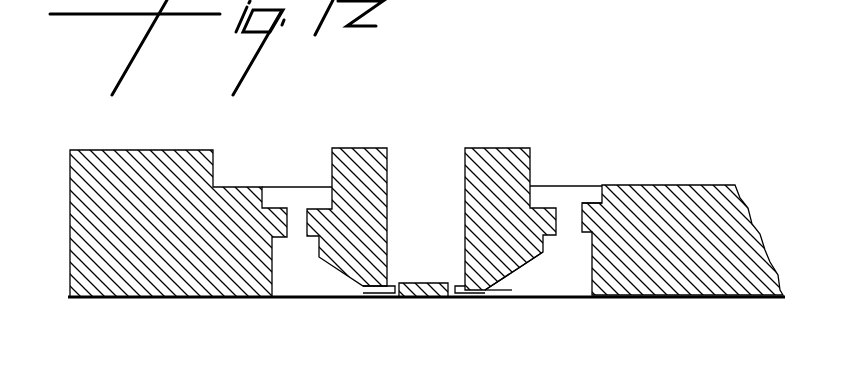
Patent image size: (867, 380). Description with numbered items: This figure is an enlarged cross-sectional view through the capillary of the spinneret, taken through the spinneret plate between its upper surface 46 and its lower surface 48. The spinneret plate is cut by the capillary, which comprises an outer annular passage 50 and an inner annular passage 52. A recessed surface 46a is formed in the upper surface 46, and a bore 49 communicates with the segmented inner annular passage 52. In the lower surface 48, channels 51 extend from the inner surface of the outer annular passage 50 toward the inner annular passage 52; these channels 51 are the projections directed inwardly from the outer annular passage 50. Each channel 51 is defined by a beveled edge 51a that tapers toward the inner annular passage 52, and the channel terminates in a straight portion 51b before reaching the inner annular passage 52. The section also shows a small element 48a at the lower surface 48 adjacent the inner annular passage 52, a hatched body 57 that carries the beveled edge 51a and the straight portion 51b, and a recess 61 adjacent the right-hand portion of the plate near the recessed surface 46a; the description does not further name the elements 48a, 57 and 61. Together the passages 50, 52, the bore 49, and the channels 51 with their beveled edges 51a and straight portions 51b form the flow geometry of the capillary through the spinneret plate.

The upper surface 46 is at (112, 150).
The recessed surface 46a is at (243, 187).
The lower surface 48 is at (132, 297).
The bottom plate projection 48a is at (417, 297).
The bore 49 is at (437, 187).
The outer annular passage 50 is at (293, 265).
The channel 51 is at (532, 265).
The beveled edge 51a is at (512, 286).
The straight portion 51b is at (482, 297).
The inner annular passage 52 is at (460, 297).
The rail block 57 is at (495, 148).
The recess 61 is at (587, 203).